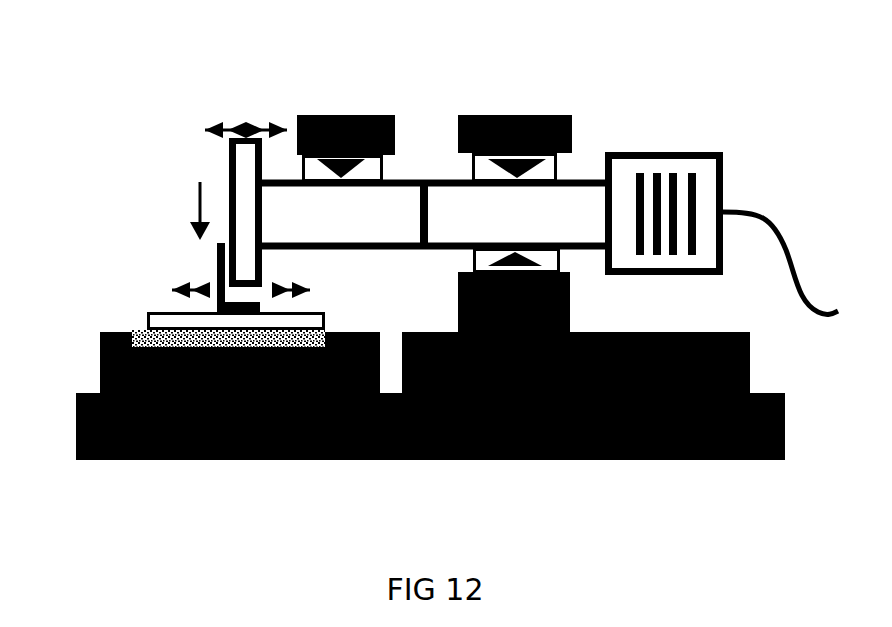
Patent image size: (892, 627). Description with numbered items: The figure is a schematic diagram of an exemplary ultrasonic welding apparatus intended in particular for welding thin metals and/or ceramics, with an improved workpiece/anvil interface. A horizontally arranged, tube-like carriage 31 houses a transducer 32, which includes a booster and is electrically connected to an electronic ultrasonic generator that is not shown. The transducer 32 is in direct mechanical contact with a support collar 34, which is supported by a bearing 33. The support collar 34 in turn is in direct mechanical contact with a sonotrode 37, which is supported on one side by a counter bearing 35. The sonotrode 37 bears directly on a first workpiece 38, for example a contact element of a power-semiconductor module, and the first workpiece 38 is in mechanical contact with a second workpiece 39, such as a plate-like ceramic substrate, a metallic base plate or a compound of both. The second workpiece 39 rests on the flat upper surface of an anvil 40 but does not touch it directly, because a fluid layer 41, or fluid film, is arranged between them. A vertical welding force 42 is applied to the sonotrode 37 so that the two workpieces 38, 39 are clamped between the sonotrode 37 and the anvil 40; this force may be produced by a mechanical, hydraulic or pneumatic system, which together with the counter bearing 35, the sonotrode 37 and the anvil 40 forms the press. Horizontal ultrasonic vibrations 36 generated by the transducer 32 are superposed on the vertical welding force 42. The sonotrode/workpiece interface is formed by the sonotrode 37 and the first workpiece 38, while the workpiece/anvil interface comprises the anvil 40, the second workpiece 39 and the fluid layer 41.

The carriage 31 is at (693, 152).
The transducer 32 is at (695, 238).
The bearing 33 is at (558, 172).
The support collar 34 is at (473, 213).
The counter bearing 35 is at (386, 167).
The horizontal ultrasonic vibrations 36 is at (249, 128).
The sonotrode 37 is at (243, 190).
The first workpiece 38 is at (214, 270).
The second workpiece 39 is at (147, 322).
The anvil 40 is at (628, 460).
The fluid layer 41 is at (132, 332).
The welding force 42 is at (198, 180).